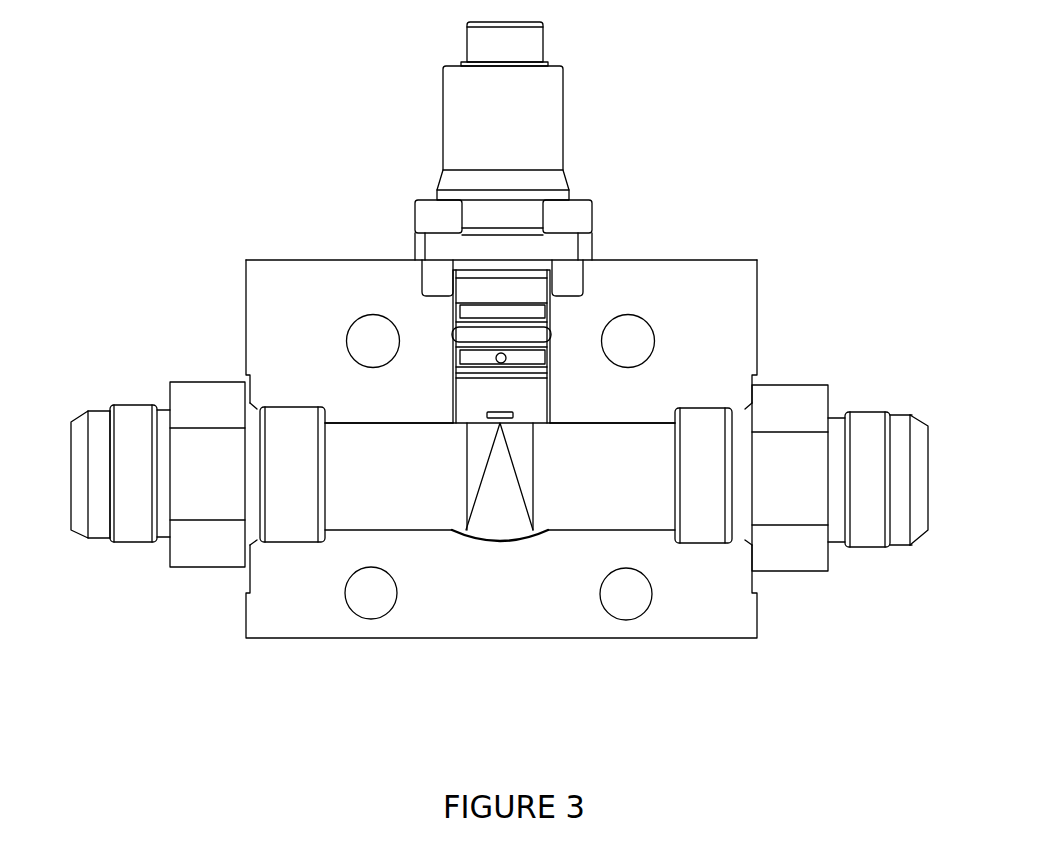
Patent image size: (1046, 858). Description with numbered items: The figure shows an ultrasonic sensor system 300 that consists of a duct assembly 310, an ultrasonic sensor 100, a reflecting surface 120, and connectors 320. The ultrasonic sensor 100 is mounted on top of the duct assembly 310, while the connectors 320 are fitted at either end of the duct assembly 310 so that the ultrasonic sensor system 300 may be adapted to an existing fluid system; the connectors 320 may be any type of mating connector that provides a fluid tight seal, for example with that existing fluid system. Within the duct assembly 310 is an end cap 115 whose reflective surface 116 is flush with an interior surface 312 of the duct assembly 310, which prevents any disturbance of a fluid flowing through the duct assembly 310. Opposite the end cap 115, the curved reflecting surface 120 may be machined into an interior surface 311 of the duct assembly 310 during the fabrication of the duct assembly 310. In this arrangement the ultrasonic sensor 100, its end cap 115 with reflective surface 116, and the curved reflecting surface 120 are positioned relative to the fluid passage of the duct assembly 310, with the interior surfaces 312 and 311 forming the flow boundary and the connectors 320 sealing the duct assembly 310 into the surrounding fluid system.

The ultrasonic sensor system 300 is at (252, 155).
The ultrasonic sensor 100 is at (562, 152).
The duct assembly 310 is at (729, 270).
The interior surface 311 is at (354, 534).
The interior surface 312 is at (623, 426).
The end cap 115 is at (445, 400).
The reflective surface 116 is at (460, 427).
The reflecting surface 120 is at (512, 555).
The connectors 320 is at (176, 391).